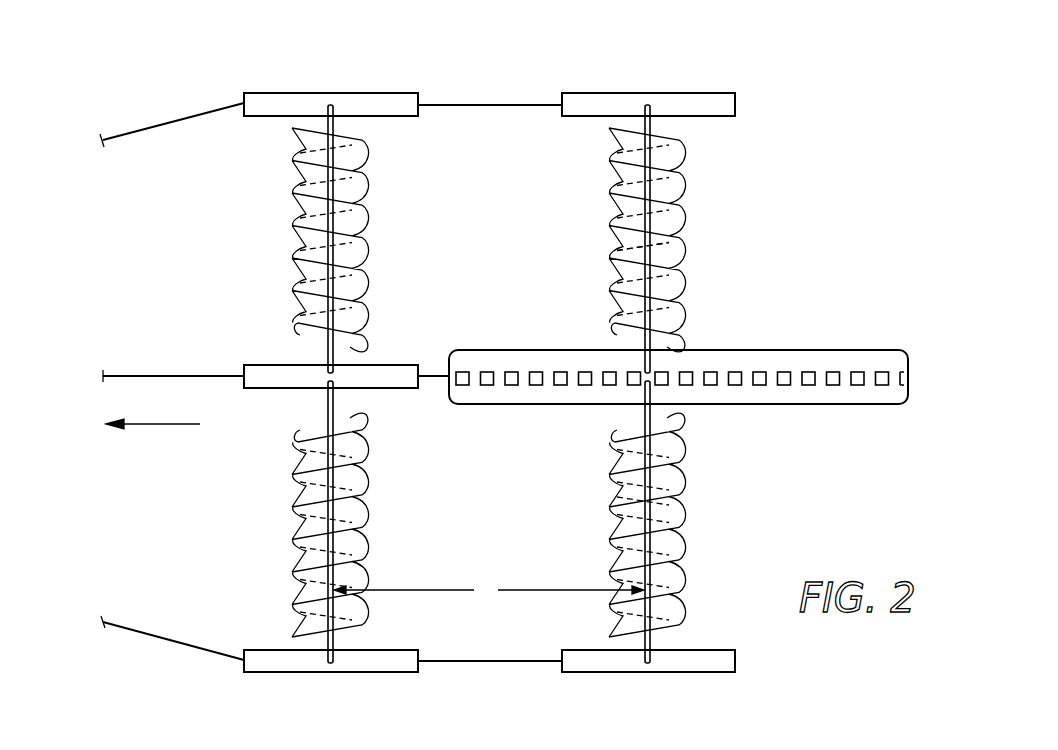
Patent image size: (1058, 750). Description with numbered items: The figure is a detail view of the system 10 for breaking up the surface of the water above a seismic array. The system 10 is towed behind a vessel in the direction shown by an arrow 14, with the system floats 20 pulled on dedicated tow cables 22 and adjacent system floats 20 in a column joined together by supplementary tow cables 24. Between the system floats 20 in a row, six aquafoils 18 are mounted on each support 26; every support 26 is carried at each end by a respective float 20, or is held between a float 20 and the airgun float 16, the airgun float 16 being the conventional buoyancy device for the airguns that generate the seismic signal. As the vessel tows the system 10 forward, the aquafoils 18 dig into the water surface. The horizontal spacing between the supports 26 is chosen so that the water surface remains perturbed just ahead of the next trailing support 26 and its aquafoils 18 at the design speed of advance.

The system 10 is at (798, 248).
The arrow 14 is at (160, 428).
The airgun float 16 is at (829, 350).
The aquafoil 18 is at (365, 260).
The system float 20 is at (365, 93).
The dedicated tow cable 22 is at (164, 126).
The supplementary tow cable 24 is at (500, 104).
The support 26 is at (626, 248).